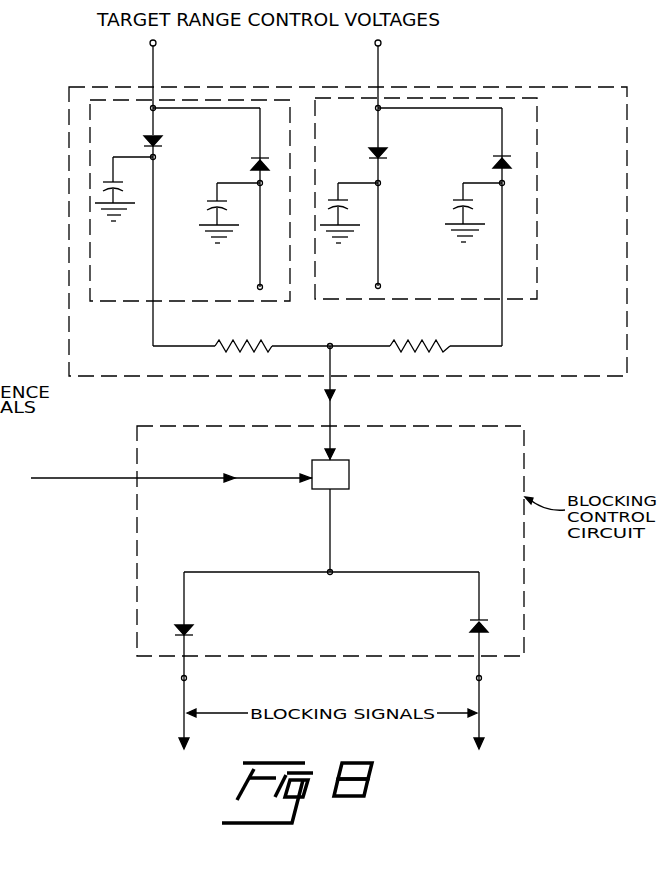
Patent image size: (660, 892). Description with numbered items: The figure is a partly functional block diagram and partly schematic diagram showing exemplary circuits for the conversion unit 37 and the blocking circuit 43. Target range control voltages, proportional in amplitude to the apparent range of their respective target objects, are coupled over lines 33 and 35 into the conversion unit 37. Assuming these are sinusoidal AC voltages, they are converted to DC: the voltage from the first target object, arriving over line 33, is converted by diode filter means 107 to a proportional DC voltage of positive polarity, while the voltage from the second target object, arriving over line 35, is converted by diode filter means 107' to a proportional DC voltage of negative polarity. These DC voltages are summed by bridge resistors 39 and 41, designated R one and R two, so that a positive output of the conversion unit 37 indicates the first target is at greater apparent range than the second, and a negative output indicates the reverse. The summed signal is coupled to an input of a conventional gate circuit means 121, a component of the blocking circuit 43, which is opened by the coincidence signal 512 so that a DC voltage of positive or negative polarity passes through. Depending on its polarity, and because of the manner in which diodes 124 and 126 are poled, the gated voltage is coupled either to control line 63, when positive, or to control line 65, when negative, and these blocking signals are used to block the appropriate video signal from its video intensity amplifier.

The line 33 is at (154, 78).
The line 35 is at (379, 78).
The conversion unit 37 is at (66, 272).
The bridge resistor 39 is at (237, 342).
The bridge resistor 41 is at (410, 342).
The blocking circuit 43 is at (108, 575).
The control line 63 is at (182, 701).
The control line 65 is at (483, 706).
The diode filter means 107 is at (190, 223).
The diode filter means 107' is at (462, 222).
The gate circuit means 121 is at (350, 465).
The diode 124 is at (190, 628).
The diode 126 is at (470, 628).
The coincidence signal 512 is at (171, 470).